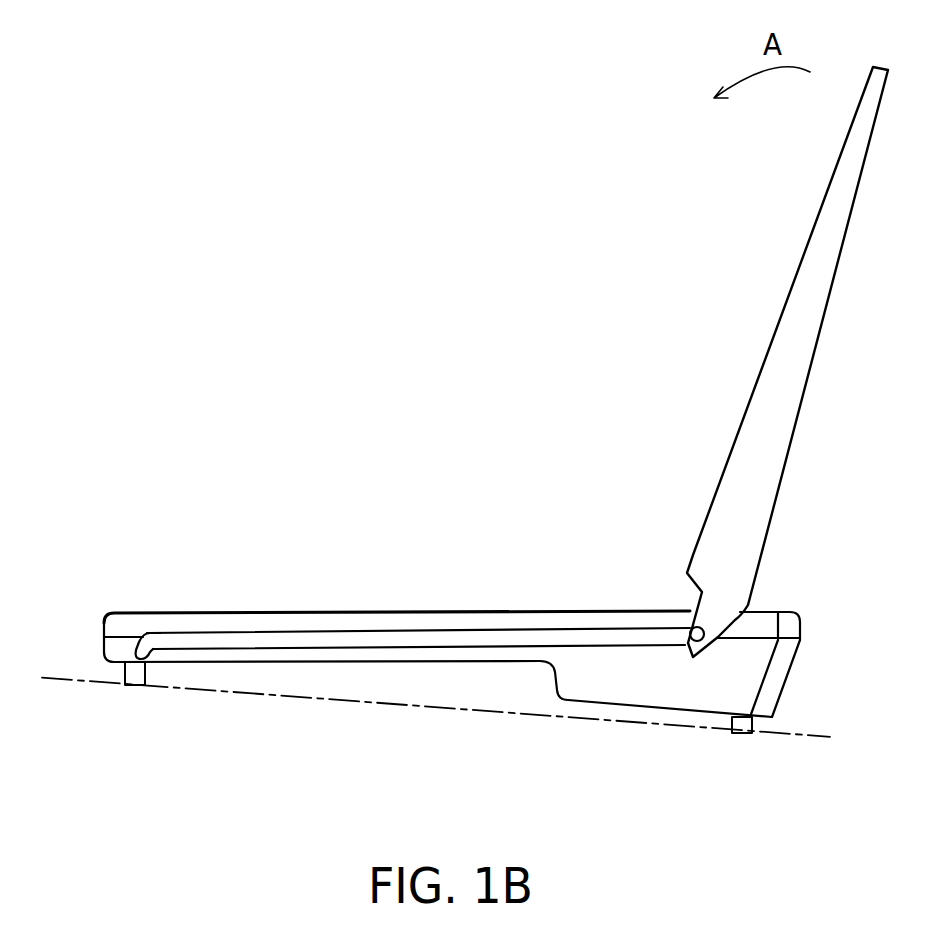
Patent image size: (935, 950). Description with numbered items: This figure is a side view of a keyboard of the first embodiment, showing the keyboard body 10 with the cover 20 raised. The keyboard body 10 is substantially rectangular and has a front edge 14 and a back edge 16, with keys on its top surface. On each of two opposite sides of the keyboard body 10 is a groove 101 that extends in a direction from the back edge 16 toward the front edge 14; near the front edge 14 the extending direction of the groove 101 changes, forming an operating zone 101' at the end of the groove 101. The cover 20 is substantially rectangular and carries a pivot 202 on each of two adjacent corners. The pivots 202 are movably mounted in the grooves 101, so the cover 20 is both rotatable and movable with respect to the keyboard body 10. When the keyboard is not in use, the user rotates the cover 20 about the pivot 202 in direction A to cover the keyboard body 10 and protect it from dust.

The keyboard body 10 is at (395, 663).
The front edge 14 is at (118, 613).
The back edge 16 is at (786, 610).
The cover 20 is at (807, 378).
The groove 101 is at (419, 694).
The operating zone 101' is at (166, 690).
The pivot 202 is at (693, 657).